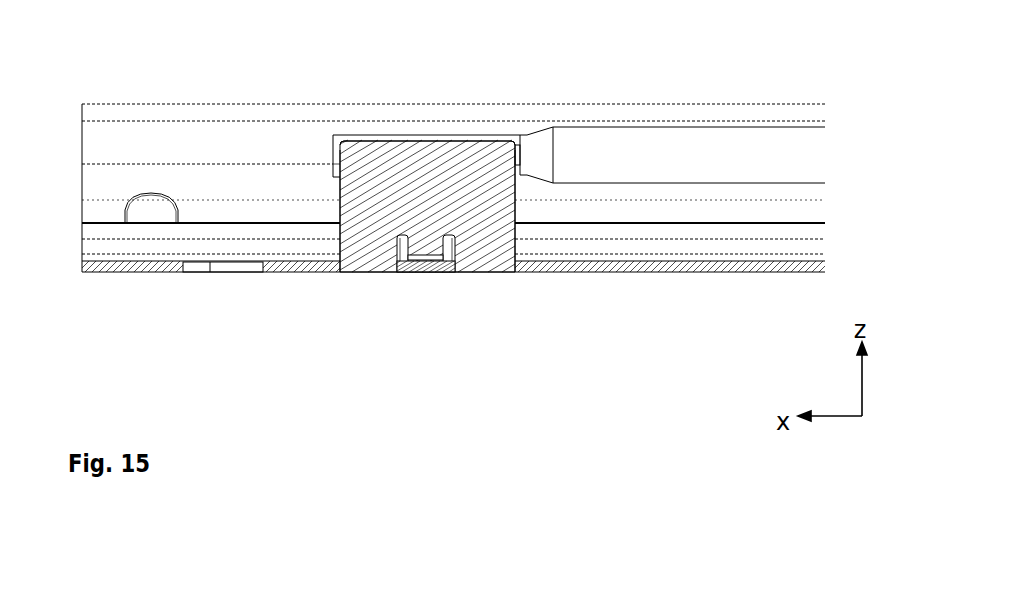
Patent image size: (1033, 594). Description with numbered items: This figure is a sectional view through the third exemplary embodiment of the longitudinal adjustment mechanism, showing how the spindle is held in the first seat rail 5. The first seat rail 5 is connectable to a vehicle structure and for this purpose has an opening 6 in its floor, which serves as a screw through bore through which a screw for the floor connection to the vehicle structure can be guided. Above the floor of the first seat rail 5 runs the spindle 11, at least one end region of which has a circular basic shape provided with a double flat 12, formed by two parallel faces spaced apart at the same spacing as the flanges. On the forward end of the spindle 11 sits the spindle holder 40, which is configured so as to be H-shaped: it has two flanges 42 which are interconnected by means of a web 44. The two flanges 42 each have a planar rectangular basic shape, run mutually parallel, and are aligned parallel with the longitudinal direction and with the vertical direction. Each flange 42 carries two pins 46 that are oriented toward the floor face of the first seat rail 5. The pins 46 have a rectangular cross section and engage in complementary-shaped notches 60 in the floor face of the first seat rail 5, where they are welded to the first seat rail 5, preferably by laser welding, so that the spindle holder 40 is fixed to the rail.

The first seat rail 5 is at (566, 270).
The opening 6 is at (228, 270).
The spindle 11 is at (605, 148).
The double flat 12 is at (335, 151).
The spindle holder 40 is at (468, 264).
The flanges 42 is at (416, 148).
The web 44 is at (427, 258).
The pins 46 is at (368, 272).
The notches 60 is at (338, 272).